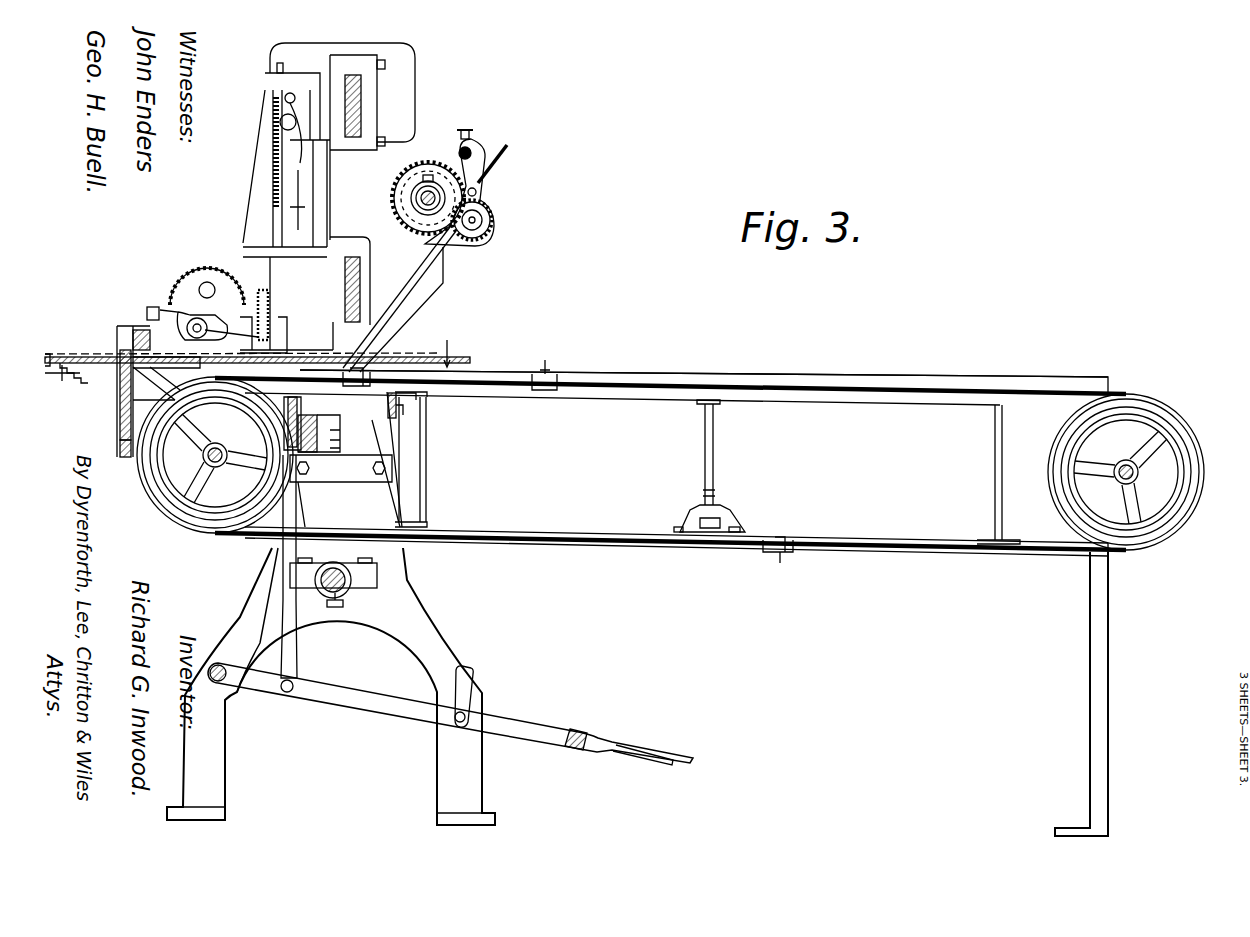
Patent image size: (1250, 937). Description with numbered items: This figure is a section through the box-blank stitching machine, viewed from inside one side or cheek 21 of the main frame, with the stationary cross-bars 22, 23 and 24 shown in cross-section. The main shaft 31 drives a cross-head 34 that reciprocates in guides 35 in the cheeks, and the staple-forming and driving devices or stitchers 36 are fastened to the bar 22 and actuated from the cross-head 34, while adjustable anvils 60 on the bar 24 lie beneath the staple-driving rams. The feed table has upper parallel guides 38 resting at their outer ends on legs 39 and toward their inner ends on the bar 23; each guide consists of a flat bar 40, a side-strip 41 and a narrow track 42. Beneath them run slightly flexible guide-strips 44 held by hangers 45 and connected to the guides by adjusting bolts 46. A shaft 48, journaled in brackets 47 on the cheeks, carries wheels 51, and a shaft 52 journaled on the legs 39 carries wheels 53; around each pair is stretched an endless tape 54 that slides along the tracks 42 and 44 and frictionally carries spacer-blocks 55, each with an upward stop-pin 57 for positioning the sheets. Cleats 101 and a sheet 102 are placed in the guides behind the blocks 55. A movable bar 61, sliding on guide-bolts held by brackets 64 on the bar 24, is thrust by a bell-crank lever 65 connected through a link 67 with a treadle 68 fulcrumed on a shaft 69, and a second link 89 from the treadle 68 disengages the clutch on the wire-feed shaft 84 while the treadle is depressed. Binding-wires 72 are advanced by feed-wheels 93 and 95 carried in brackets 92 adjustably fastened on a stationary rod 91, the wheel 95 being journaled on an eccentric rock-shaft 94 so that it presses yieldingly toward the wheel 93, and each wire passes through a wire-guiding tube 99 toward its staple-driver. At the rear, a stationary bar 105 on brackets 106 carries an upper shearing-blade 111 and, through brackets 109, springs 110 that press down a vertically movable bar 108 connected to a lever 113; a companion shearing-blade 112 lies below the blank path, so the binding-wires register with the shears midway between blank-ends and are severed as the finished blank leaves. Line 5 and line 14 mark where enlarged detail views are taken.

The detail line 5 is at (278, 337).
The section line 14 is at (676, 369).
The cheek 21 is at (443, 646).
The cross-bar 22 is at (362, 276).
The cross-bar 23 is at (418, 401).
The cross-bar 24 is at (322, 484).
The main shaft 31 is at (347, 580).
The cross-head 34 is at (362, 100).
The guides 35 is at (345, 174).
The staple-forming and driving devices 36 is at (305, 293).
The upper parallel guides 38 is at (783, 373).
The legs 39 is at (1090, 634).
The flat bar 40 is at (832, 402).
The side-strip 41 is at (900, 377).
The track 42 is at (903, 403).
The guide-strips 44 is at (853, 539).
The hangers 45 is at (427, 470).
The adjusting bolts 46 is at (714, 470).
The brackets 47 is at (188, 431).
The shaft 48 is at (213, 461).
The wheels 51 is at (193, 532).
The shaft 52 is at (1133, 466).
The wheels 53 is at (1183, 504).
The endless tape 54 is at (664, 380).
The spacer-blocks 55 is at (366, 374).
The stop-pin 57 is at (545, 360).
The anvils 60 is at (325, 437).
The movable bar 61 is at (302, 410).
The brackets 64 is at (227, 451).
The bell-crank lever 65 is at (223, 460).
The link 67 is at (283, 602).
The foot-lever 68 is at (536, 727).
The shaft 69 is at (218, 664).
The binding-wire 72 is at (501, 163).
The shaft 84 is at (420, 205).
The link 89 is at (470, 685).
The stationary rod 91 is at (471, 150).
The brackets 92 is at (468, 248).
The binding-wire feed-wheel 93 is at (421, 164).
The rock-shaft 94 is at (480, 219).
The companion binding-wire feed-wheel 95 is at (493, 229).
The wire-guiding tube 99 is at (418, 310).
The cleats 101 is at (66, 372).
The sheet 102 is at (449, 309).
The stationary bar 105 is at (188, 279).
The brackets 106 is at (140, 420).
The movable bar 108 is at (125, 448).
The brackets 109 is at (156, 310).
The springs 110 is at (120, 335).
The shearing-blade 111 is at (166, 348).
The companion shearing-blade 112 is at (125, 400).
The lever 113 is at (160, 510).